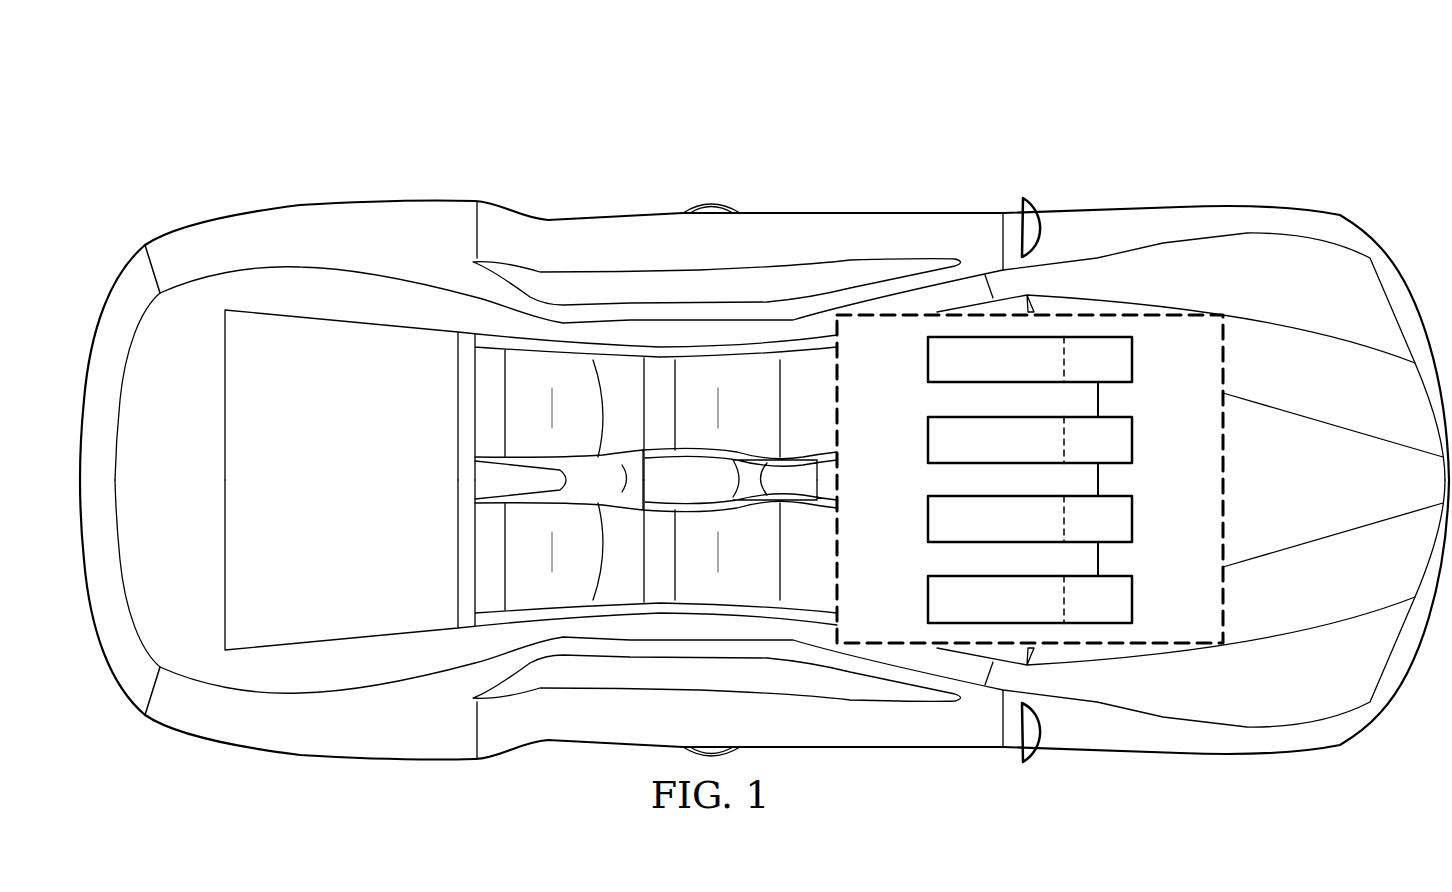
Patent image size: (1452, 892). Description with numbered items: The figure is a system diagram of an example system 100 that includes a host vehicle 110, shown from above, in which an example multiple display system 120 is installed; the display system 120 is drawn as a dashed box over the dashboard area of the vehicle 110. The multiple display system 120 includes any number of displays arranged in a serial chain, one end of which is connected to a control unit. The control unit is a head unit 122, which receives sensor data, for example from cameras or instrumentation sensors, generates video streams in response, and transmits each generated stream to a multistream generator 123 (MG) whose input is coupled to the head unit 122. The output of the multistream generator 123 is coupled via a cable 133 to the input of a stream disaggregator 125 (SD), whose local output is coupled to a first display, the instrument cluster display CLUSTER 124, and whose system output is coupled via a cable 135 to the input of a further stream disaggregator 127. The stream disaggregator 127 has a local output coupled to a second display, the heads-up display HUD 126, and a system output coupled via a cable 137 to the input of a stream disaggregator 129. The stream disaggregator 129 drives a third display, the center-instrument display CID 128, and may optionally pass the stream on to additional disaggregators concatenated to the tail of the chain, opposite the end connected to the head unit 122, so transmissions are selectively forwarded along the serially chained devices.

The system 100 is at (374, 117).
The host vehicle 110 is at (602, 211).
The multiple display system 120 is at (1234, 450).
The head unit 122 is at (928, 358).
The multistream generator 123 is at (1132, 357).
The instrument cluster display 124 is at (928, 438).
The stream disaggregator 125 is at (1132, 438).
The heads-up display 126 is at (928, 518).
The stream disaggregator 127 is at (1132, 520).
The center-instrument display 128 is at (928, 598).
The stream disaggregator 129 is at (1132, 600).
The cable 133 is at (1100, 400).
The cable 135 is at (1100, 478).
The cable 137 is at (1100, 557).